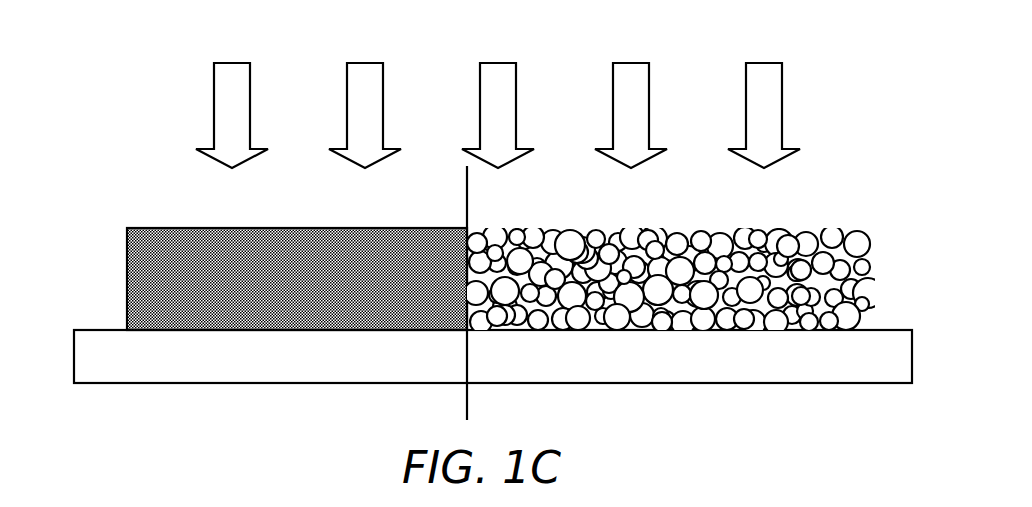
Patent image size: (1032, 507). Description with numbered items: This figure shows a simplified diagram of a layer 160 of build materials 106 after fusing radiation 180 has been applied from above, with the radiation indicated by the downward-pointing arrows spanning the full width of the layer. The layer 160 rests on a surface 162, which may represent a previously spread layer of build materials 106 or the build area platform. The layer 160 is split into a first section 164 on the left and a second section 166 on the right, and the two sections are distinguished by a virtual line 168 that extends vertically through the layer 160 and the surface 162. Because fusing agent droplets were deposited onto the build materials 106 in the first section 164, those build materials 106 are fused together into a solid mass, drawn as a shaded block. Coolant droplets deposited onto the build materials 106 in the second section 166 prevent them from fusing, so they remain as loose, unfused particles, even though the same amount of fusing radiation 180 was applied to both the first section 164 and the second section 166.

The fusing radiation 180 is at (214, 80).
The layer of build materials 160 is at (113, 190).
The first section 164 is at (117, 261).
The virtual line 168 is at (467, 175).
The second section 166 is at (696, 317).
The surface 162 is at (148, 383).
The build materials 106 is at (590, 322).